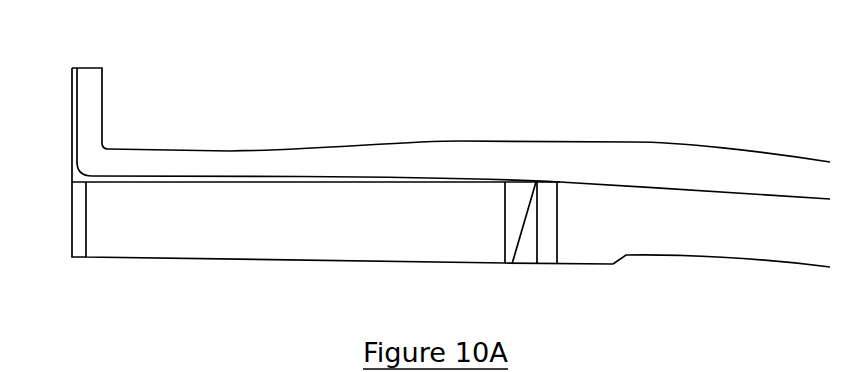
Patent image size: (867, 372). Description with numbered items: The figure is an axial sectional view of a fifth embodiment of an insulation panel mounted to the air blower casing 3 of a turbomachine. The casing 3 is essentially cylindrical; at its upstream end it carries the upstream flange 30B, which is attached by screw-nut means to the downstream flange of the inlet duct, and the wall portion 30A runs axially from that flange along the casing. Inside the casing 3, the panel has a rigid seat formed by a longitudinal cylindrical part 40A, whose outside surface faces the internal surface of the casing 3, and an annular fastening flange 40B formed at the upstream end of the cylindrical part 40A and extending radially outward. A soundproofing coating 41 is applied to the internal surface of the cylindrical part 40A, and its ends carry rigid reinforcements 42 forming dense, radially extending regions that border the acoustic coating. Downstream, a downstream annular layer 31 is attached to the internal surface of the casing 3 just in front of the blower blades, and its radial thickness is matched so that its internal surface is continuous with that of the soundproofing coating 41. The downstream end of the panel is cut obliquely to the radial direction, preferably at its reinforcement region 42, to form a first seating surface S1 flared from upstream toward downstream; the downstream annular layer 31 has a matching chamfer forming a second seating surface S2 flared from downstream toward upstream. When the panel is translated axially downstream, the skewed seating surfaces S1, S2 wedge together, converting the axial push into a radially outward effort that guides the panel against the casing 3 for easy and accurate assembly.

The air blower casing 3 is at (633, 142).
The downstream annular layer 31 is at (697, 201).
The horizontal portion of member 30A is at (187, 158).
The upstream flange 30B is at (82, 99).
The longitudinal cylindrical part 40A is at (247, 182).
The annular fastening flange 40B is at (72, 115).
The soundproofing coating 41 is at (187, 223).
The rigid reinforcements 42 is at (523, 203).
The first seating surface S1 is at (515, 228).
The second seating surface S2 is at (530, 220).